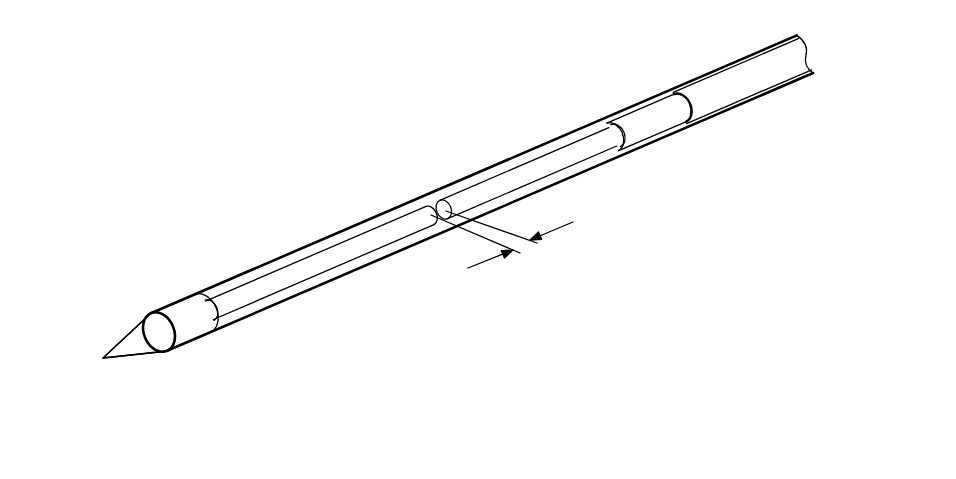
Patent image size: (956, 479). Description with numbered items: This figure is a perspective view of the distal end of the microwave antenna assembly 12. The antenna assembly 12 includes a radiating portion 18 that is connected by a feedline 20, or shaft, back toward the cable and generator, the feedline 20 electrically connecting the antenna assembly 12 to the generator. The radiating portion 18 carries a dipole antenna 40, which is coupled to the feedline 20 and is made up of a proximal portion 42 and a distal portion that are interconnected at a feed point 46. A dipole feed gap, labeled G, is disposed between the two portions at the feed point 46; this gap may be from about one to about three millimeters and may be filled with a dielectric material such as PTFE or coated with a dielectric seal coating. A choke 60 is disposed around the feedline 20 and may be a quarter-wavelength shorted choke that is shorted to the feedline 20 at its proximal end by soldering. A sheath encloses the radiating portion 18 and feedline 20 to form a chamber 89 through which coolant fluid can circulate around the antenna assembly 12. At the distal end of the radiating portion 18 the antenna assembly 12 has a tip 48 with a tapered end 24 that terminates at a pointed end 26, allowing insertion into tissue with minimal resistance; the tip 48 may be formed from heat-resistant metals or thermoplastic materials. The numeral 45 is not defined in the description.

The antenna assembly 12 is at (420, 130).
The radiating portion 18 is at (290, 222).
The feedline 20 is at (735, 42).
The tapered end 24 is at (136, 324).
The pointed end 26 is at (100, 358).
The dipole antenna 40 is at (563, 177).
The proximal portion 42 is at (530, 165).
The inner tube distal portion 45 is at (272, 290).
The feed point 46 is at (433, 212).
The tip 48 is at (128, 350).
The choke 60 is at (707, 83).
The chamber 89 is at (255, 278).